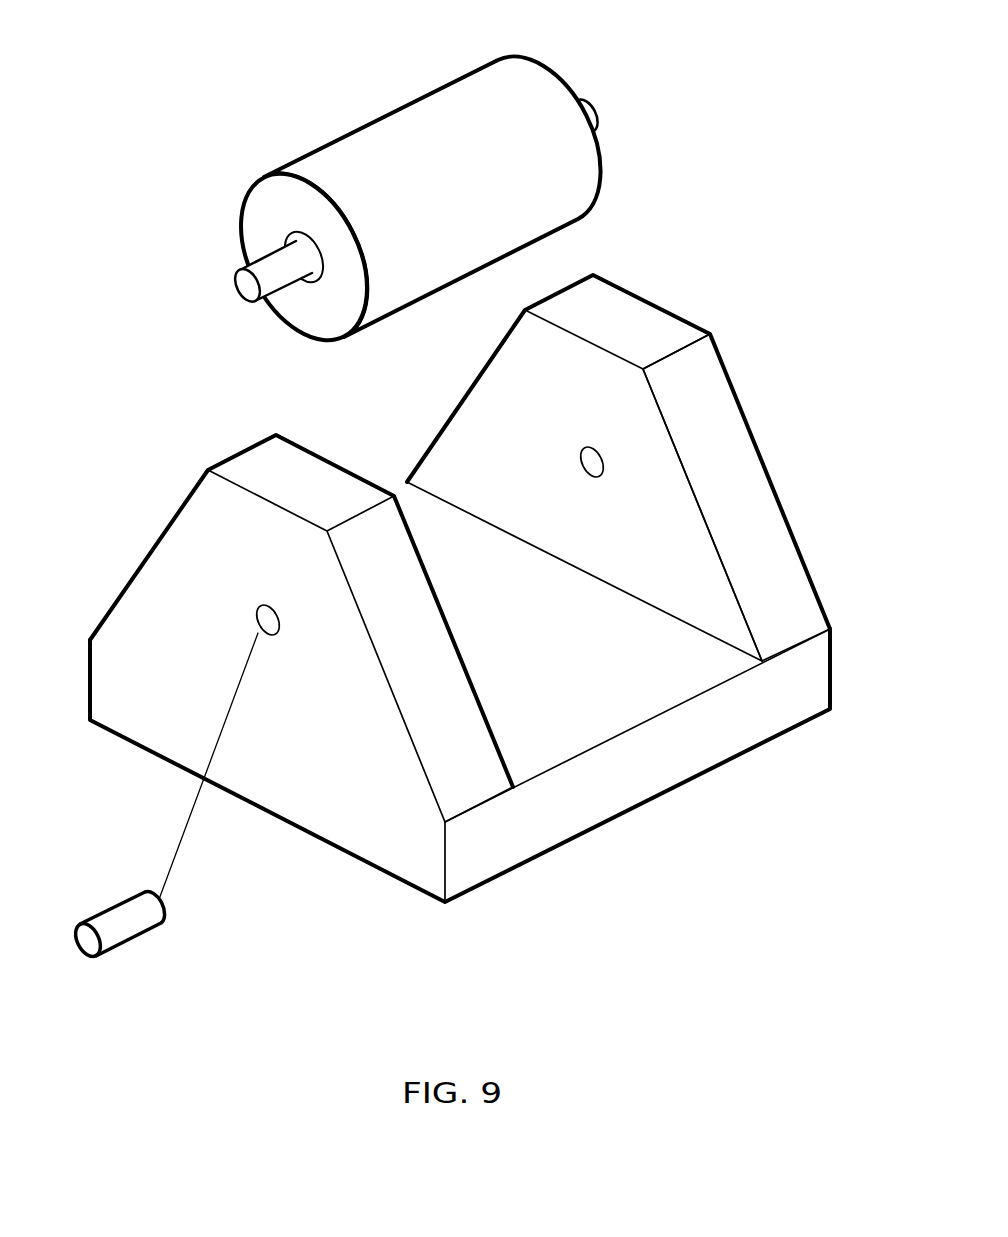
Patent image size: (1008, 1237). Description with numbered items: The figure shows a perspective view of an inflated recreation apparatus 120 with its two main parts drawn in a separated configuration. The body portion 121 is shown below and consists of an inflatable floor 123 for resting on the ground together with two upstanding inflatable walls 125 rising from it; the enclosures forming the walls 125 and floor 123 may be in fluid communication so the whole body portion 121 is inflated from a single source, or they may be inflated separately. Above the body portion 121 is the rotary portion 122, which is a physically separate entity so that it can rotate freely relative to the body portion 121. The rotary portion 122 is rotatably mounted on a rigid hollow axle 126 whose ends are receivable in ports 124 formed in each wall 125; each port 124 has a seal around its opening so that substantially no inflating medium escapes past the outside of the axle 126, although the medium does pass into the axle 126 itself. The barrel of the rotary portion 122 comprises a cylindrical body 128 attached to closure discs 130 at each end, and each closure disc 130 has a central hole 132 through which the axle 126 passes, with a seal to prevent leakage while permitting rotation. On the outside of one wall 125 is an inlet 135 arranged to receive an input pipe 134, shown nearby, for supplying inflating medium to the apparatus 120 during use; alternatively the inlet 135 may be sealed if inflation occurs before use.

The inflated recreation apparatus 120 is at (469, 520).
The body portion 121 is at (470, 562).
The rotary portion 122 is at (440, 216).
The inflatable floor 123 is at (664, 767).
The port 124 is at (605, 457).
The upstanding inflatable wall 125 is at (762, 490).
The rigid hollow axle 126 is at (267, 263).
The cylindrical body 128 is at (371, 119).
The closure disc 130 is at (257, 205).
The central hole 132 is at (313, 283).
The input pipe 134 is at (146, 937).
The inlet 135 is at (258, 612).